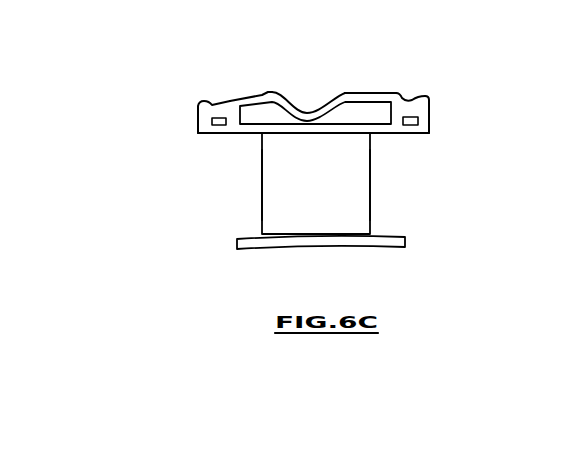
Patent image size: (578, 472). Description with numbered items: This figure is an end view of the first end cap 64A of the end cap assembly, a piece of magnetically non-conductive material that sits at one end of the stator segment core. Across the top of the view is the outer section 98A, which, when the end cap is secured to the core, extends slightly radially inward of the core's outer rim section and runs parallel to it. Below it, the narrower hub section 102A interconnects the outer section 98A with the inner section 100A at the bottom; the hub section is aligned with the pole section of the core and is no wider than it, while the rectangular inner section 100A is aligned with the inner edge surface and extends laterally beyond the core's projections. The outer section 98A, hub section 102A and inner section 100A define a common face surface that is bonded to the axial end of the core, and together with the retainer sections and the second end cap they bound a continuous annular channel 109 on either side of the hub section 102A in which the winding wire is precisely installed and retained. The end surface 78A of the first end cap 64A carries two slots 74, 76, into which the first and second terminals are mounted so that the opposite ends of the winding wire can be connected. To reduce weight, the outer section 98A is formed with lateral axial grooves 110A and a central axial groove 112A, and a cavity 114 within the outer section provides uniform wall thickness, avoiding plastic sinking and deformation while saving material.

The first end cap 64A is at (402, 44).
The end surface 78A is at (203, 110).
The lateral axial grooves 110A is at (215, 104).
The central axial groove 112A is at (312, 112).
The outer section 98A is at (423, 104).
The cavity 114 is at (266, 102).
The slot 74 is at (220, 125).
The slot 76 is at (413, 124).
The hub section 102A is at (273, 193).
The continuous annular channel 109 is at (176, 179).
The inner section 100A is at (265, 240).